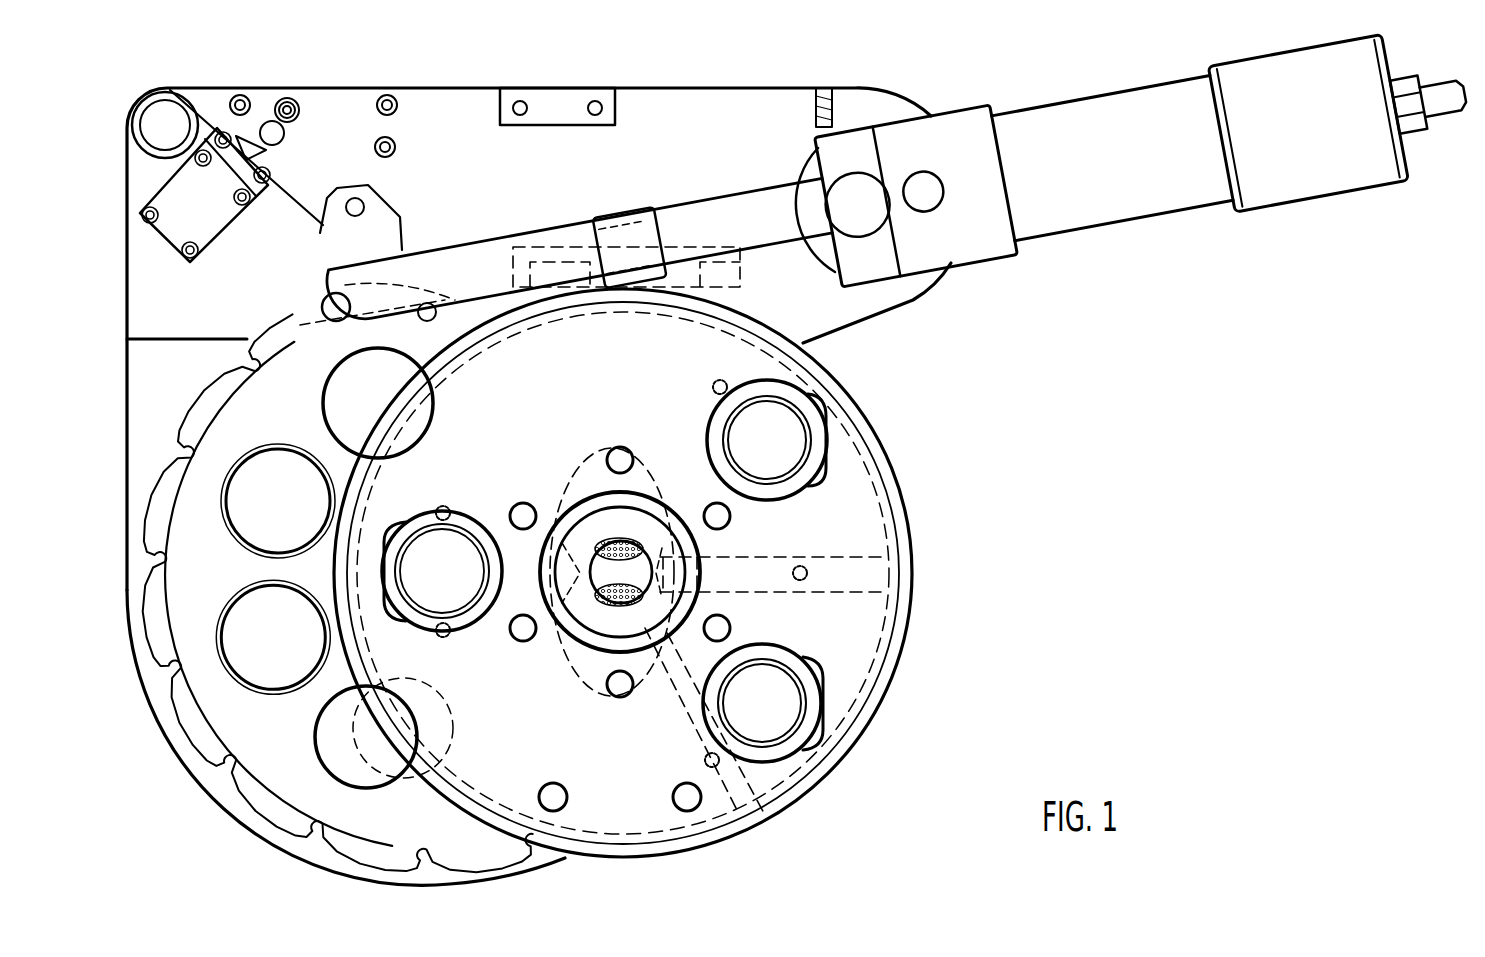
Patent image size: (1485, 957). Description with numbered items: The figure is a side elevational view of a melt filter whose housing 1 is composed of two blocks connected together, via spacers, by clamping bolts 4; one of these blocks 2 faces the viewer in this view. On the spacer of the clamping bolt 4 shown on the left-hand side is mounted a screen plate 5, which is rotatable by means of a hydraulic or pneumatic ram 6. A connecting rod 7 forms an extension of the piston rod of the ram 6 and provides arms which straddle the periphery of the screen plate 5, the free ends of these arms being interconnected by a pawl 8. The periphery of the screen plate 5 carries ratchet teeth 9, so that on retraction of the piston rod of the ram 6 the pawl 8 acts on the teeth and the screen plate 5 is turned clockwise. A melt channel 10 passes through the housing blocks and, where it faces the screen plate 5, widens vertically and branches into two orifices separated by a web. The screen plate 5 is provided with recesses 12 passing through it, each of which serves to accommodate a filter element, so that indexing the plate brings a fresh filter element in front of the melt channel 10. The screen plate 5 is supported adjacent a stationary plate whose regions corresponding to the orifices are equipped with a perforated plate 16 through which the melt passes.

The housing 1 is at (905, 368).
The block 2 is at (852, 526).
The clamping bolt 4 is at (452, 586).
The screen plate 5 is at (267, 748).
The hydraulic or pneumatic ram 6 is at (1120, 208).
The connecting rod 7 is at (488, 247).
The pawl 8 is at (330, 300).
The ratchet teeth 9 is at (215, 755).
The melt channel 10 is at (643, 580).
The recess 12 is at (345, 762).
The perforated plate 16 is at (643, 547).